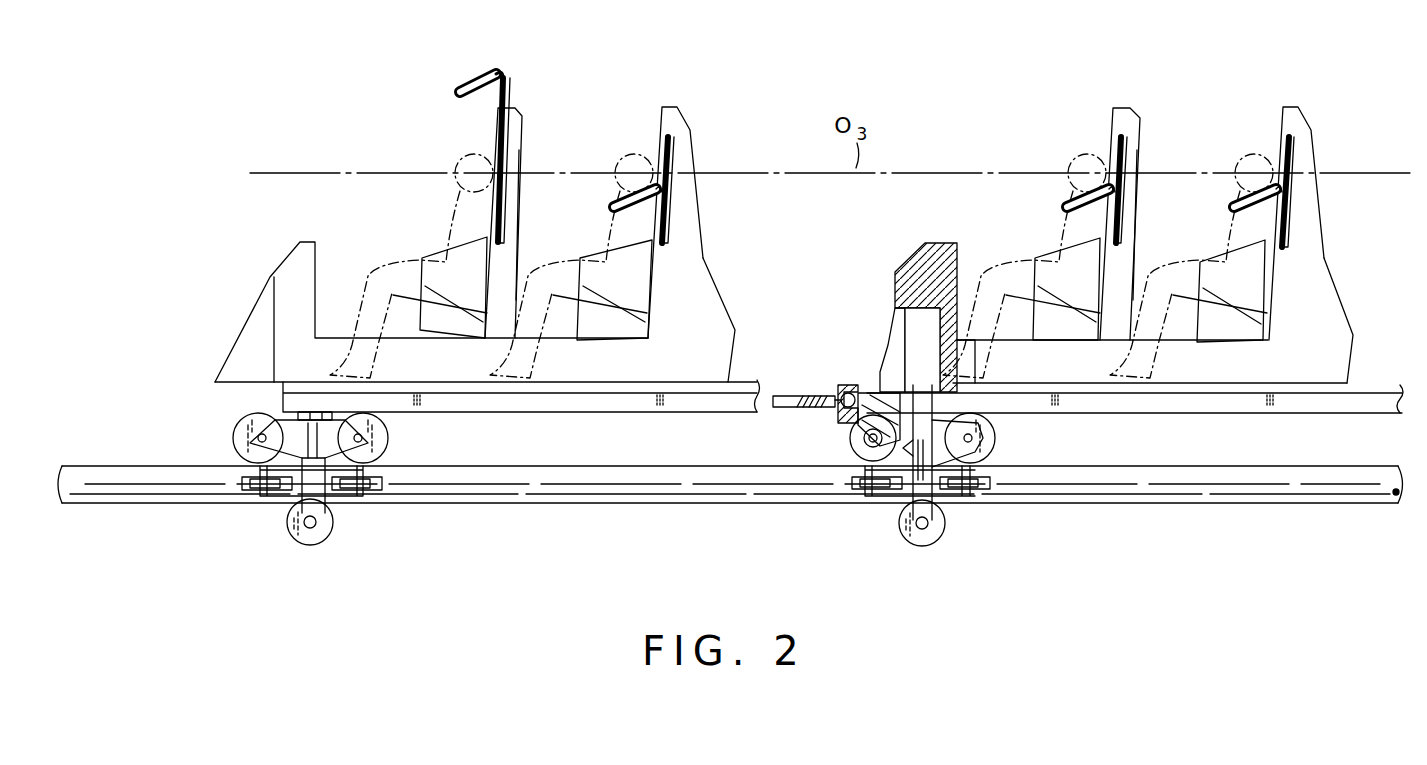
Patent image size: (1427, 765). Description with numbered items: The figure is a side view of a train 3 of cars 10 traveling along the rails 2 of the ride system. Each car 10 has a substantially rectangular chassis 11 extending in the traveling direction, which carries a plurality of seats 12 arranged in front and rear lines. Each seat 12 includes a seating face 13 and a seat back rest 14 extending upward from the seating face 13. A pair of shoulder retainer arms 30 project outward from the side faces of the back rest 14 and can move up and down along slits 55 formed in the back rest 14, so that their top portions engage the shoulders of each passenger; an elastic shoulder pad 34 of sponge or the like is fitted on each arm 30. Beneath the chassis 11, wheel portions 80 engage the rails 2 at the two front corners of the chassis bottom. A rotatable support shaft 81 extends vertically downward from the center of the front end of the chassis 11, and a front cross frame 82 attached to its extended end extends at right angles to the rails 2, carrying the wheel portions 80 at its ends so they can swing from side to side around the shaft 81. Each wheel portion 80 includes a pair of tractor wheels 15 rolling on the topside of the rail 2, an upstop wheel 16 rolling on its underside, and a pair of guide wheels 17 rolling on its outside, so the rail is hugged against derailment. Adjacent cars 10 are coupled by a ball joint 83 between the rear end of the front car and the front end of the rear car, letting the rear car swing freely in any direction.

The rail 2 is at (528, 505).
The train 3 is at (800, 143).
The car 10 is at (713, 230).
The chassis 11 is at (601, 412).
The seat 12 is at (522, 178).
The seating face 13 is at (408, 273).
The seat back rest 14 is at (517, 224).
The tractor wheels 15 is at (235, 440).
The upstop wheel 16 is at (333, 523).
The guide wheels 17 is at (253, 490).
The shoulder retainer arms 30 is at (515, 80).
The elastic shoulder pad 34 is at (478, 82).
The slits 55 is at (512, 160).
The wheel portion 80 is at (284, 516).
The rotatable support shaft 81 is at (297, 405).
The front cross frame 82 is at (885, 386).
The ball joint 83 is at (830, 410).